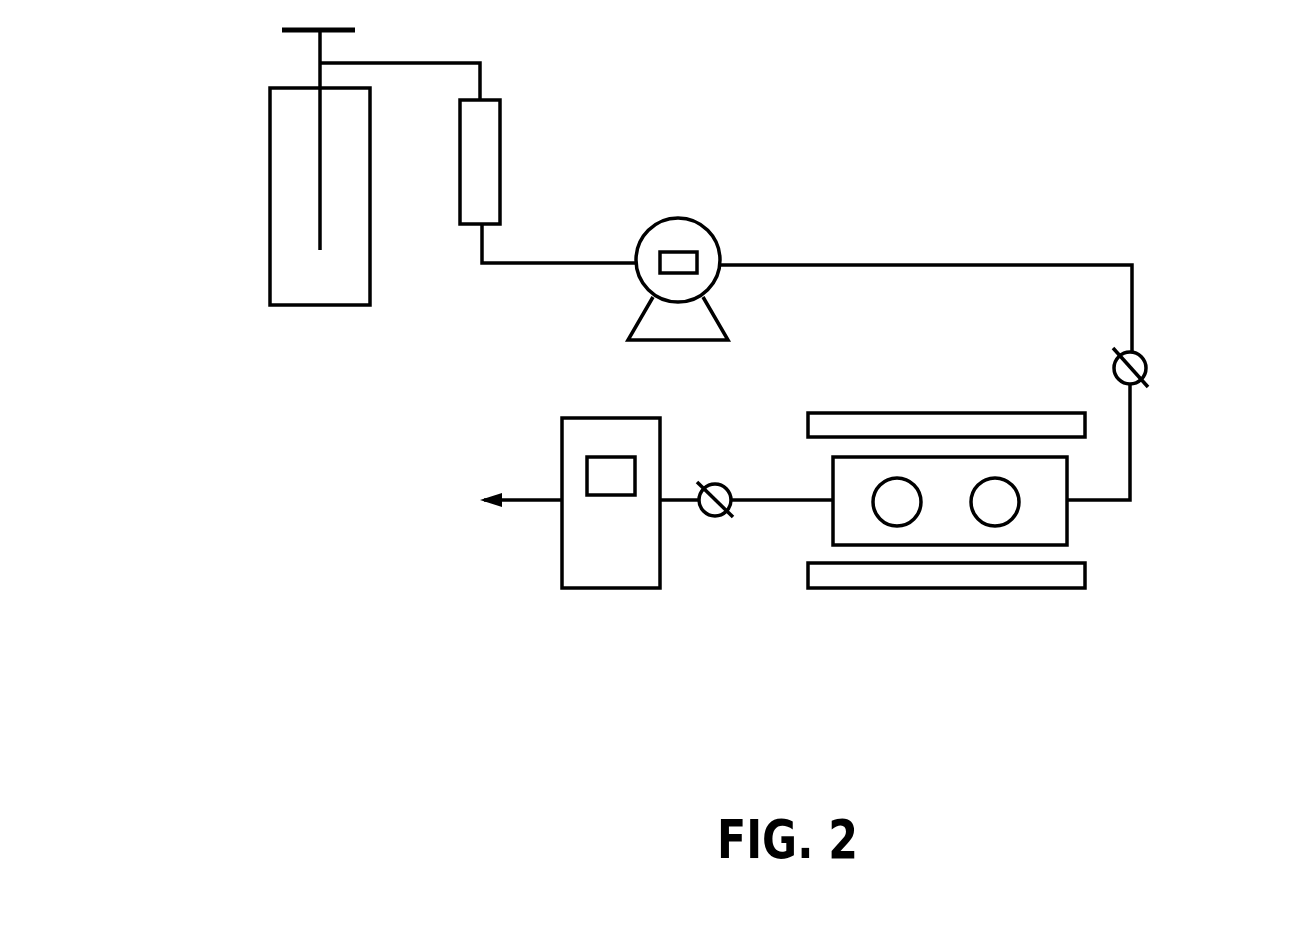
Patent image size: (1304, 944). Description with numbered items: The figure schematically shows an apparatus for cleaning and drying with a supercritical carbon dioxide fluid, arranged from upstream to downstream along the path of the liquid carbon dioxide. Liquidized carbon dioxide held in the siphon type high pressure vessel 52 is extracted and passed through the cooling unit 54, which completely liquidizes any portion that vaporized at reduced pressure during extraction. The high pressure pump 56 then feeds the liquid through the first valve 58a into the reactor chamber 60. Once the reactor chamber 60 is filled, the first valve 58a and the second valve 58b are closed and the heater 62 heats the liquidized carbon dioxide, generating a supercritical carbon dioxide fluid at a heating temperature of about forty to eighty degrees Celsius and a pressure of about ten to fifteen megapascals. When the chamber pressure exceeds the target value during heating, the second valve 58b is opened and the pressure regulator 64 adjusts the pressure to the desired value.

The high pressure vessel 52 is at (272, 176).
The cooling unit 54 is at (500, 138).
The high pressure pump 56 is at (678, 218).
The first valve 58a is at (1147, 366).
The second valve 58b is at (718, 518).
The reactor chamber 60 is at (1058, 537).
The heater 62 is at (953, 588).
The pressure regulator 64 is at (608, 588).